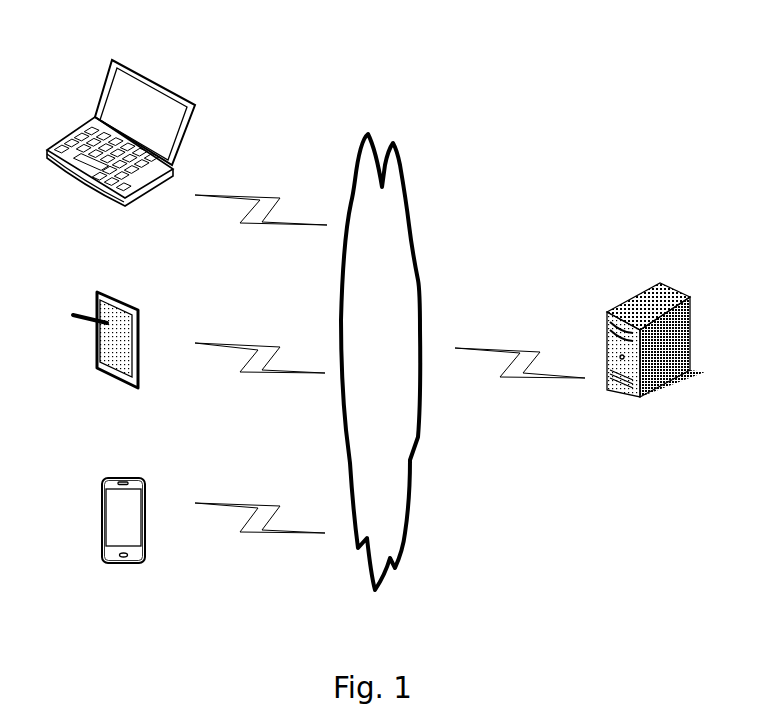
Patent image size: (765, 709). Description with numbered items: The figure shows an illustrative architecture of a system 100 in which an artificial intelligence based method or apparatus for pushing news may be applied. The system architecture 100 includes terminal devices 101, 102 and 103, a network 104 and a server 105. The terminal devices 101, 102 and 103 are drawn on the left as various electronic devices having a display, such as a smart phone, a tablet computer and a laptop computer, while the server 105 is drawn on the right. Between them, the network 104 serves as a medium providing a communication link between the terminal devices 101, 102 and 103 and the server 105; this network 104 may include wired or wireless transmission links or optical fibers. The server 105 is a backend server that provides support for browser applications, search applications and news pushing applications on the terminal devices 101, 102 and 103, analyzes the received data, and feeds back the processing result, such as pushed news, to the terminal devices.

The system architecture 100 is at (608, 53).
The terminal device 101 is at (123, 543).
The terminal device 102 is at (105, 357).
The terminal device 103 is at (121, 151).
The network 104 is at (380, 362).
The server 105 is at (656, 360).